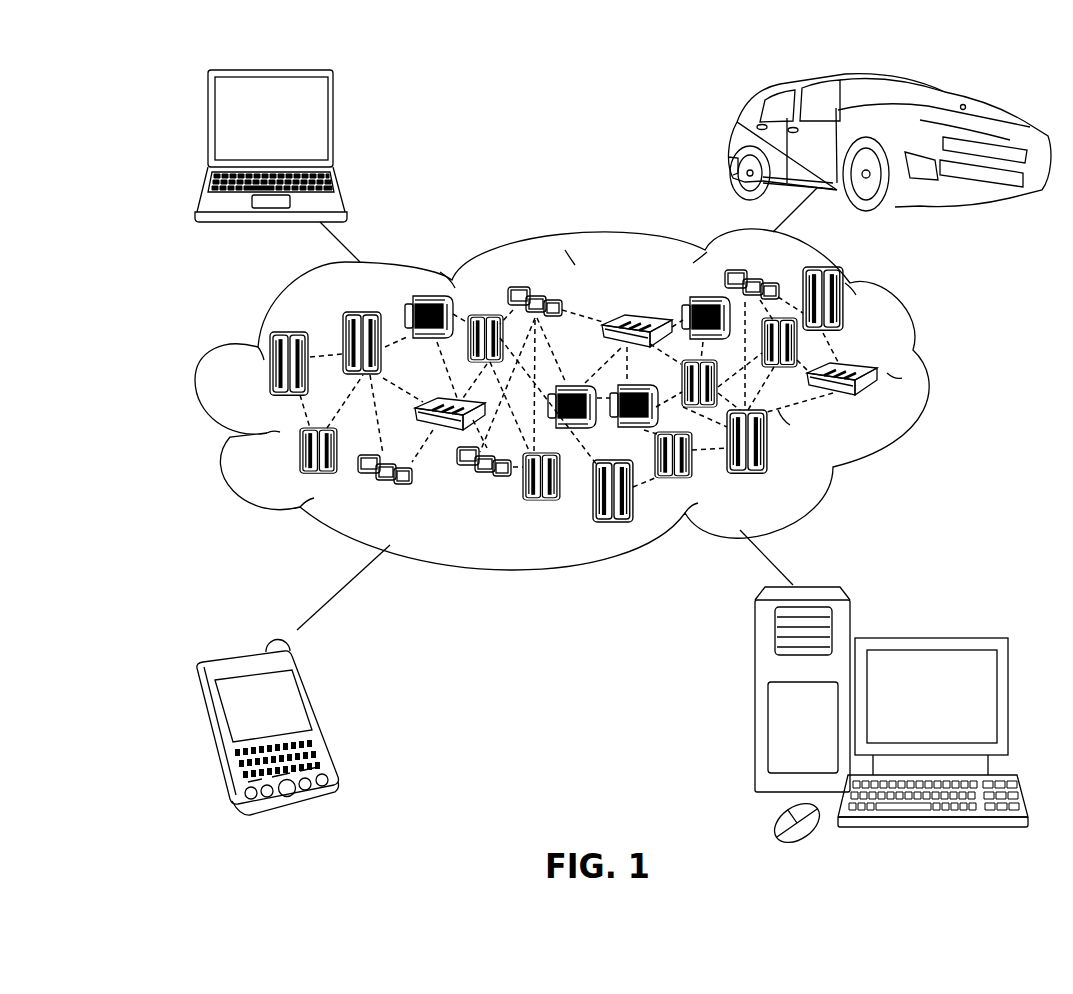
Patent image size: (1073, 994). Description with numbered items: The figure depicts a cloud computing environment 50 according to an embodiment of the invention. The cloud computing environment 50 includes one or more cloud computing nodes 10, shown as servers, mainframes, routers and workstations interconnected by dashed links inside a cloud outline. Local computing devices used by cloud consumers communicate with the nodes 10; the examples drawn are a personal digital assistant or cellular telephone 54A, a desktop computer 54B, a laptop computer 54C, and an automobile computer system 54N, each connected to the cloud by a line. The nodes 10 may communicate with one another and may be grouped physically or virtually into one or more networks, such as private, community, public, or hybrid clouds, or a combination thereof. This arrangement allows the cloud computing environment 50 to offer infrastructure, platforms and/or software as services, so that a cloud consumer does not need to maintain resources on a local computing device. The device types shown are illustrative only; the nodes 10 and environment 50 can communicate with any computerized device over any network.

The cloud computing node 10 is at (877, 405).
The cloud computing environment 50 is at (590, 399).
The personal digital assistant (PDA) or cellular telephone 54A is at (323, 720).
The desktop computer 54B is at (930, 637).
The laptop computer 54C is at (337, 117).
The automobile computer system 54N is at (732, 142).